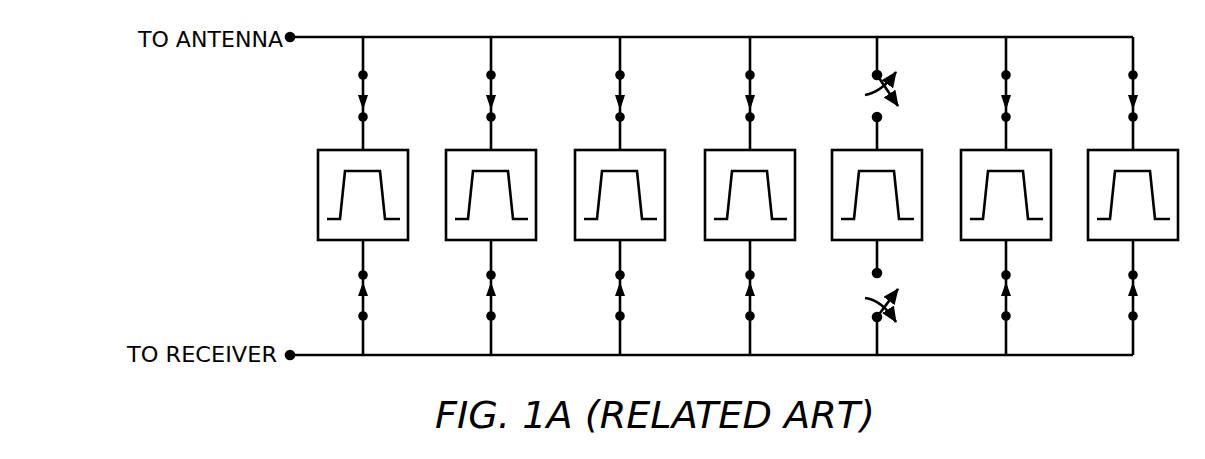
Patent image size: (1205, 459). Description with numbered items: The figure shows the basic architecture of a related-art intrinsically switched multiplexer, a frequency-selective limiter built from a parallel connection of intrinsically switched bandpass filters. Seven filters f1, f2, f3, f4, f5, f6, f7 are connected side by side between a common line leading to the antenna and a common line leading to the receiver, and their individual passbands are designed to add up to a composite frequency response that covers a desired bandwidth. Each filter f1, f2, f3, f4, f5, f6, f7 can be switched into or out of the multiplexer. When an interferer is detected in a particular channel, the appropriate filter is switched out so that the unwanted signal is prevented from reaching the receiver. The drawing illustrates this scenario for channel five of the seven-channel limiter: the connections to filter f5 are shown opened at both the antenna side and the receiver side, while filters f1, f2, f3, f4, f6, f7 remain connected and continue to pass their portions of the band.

The intrinsically switched bandpass filter f1 is at (363, 196).
The intrinsically switched bandpass filter f2 is at (491, 196).
The intrinsically switched bandpass filter f3 is at (620, 196).
The intrinsically switched bandpass filter f4 is at (750, 196).
The intrinsically switched bandpass filter f5 is at (877, 196).
The intrinsically switched bandpass filter f6 is at (1006, 196).
The intrinsically switched bandpass filter f7 is at (1133, 196).